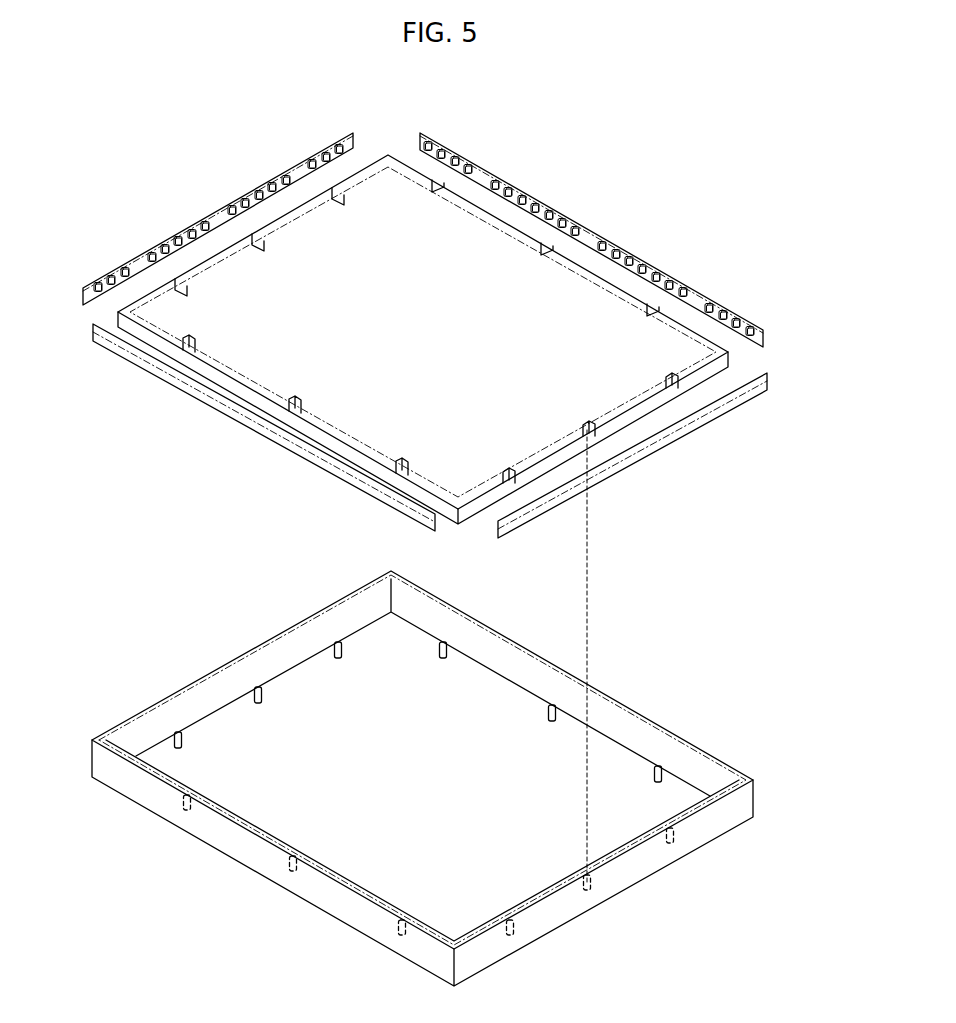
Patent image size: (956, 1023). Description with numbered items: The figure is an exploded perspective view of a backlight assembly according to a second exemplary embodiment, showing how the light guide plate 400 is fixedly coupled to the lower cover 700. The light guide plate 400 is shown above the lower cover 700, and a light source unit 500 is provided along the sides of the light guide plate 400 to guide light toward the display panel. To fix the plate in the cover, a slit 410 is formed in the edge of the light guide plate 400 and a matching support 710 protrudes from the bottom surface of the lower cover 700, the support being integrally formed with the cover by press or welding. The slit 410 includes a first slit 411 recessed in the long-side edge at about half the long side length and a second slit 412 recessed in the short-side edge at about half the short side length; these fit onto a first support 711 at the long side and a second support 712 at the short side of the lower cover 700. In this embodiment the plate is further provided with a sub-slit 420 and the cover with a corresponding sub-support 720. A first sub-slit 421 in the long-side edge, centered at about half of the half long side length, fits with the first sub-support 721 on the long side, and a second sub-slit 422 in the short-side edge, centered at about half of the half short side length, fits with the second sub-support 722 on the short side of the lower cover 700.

The light guide plate 400 is at (748, 353).
The slit 410 is at (435, 348).
The first slit 411 is at (540, 260).
The second slit 412 is at (268, 243).
The sub-slit 420 is at (422, 340).
The first sub-slit 421 is at (433, 197).
The second sub-slit 422 is at (348, 192).
The light source unit 500 is at (630, 243).
The lower cover 700 is at (766, 778).
The support 710 is at (439, 779).
The first support 711 is at (552, 710).
The second support 712 is at (260, 687).
The sub-support 720 is at (442, 768).
The first sub-support 721 is at (443, 650).
The second sub-support 722 is at (340, 643).